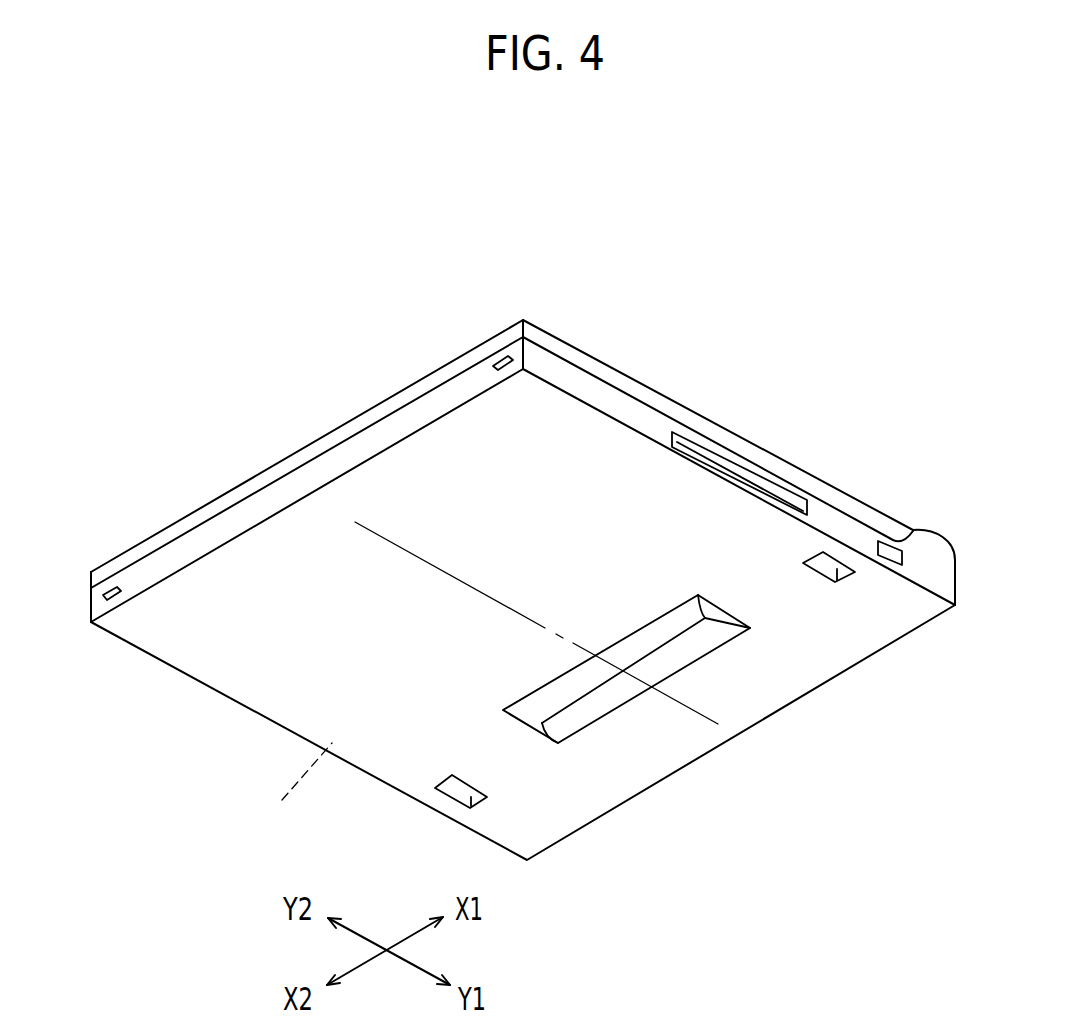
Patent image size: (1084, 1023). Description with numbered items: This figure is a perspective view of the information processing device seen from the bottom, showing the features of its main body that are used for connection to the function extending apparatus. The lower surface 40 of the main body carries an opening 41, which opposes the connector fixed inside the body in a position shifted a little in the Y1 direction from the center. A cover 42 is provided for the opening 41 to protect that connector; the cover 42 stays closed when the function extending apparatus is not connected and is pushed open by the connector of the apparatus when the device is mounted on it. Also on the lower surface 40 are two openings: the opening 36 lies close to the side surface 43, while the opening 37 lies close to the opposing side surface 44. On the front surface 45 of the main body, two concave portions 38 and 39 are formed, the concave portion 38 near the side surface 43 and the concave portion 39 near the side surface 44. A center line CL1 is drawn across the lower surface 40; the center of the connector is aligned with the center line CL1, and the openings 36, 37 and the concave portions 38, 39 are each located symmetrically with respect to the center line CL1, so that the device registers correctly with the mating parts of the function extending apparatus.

The opening 36 is at (452, 784).
The opening 37 is at (830, 578).
The concave portion 38 is at (110, 585).
The concave portion 39 is at (500, 357).
The lower surface 40 is at (285, 703).
The opening 41 is at (740, 630).
The cover 42 is at (657, 672).
The side surface 43 is at (287, 787).
The side surface 44 is at (638, 408).
The front surface 45 is at (285, 487).
The center line CL1 is at (418, 555).